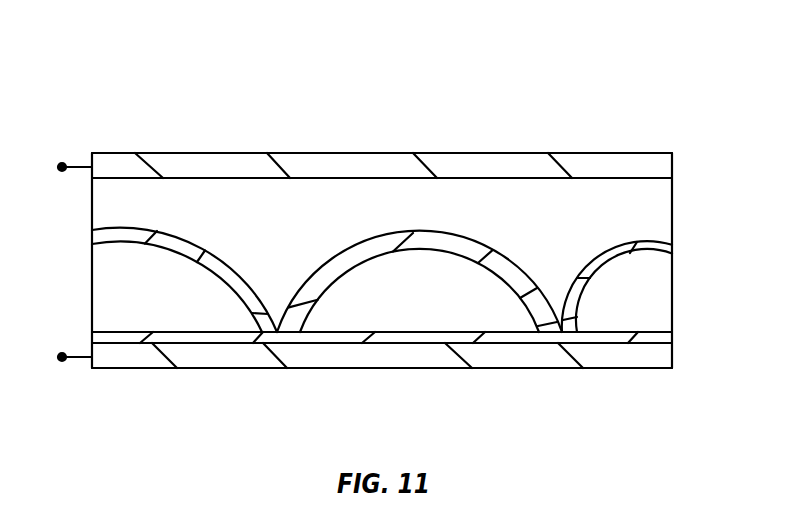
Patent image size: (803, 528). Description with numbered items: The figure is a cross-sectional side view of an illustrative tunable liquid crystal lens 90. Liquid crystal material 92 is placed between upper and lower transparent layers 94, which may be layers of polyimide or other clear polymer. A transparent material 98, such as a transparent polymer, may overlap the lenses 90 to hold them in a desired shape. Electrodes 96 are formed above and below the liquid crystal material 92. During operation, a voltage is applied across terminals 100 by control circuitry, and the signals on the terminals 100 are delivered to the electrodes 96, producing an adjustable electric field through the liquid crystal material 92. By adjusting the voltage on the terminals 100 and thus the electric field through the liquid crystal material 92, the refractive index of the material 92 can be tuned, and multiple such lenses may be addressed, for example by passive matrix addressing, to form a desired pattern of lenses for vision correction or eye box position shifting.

The tunable liquid crystal lens 90 is at (653, 67).
The liquid crystal material 92 is at (662, 318).
The transparent layers 94 is at (660, 249).
The electrodes 96 is at (525, 163).
The transparent material 98 is at (102, 199).
The terminals 100 is at (63, 163).